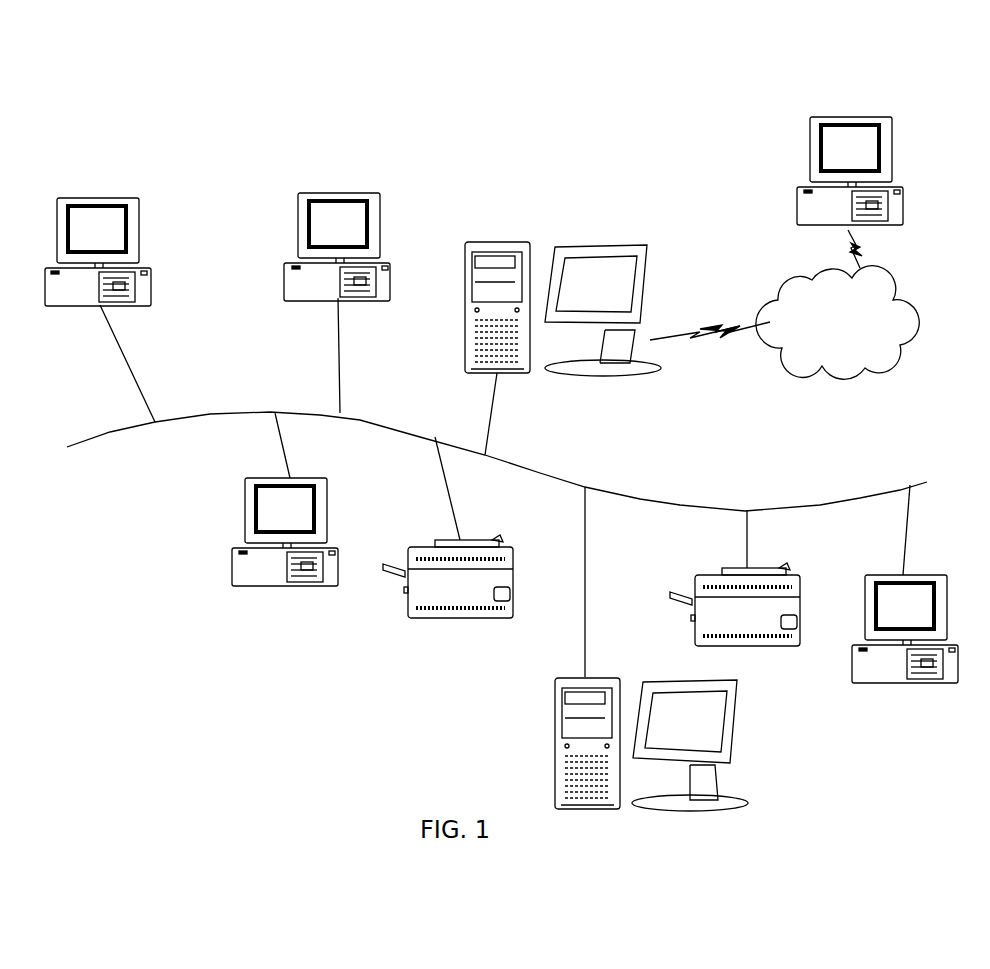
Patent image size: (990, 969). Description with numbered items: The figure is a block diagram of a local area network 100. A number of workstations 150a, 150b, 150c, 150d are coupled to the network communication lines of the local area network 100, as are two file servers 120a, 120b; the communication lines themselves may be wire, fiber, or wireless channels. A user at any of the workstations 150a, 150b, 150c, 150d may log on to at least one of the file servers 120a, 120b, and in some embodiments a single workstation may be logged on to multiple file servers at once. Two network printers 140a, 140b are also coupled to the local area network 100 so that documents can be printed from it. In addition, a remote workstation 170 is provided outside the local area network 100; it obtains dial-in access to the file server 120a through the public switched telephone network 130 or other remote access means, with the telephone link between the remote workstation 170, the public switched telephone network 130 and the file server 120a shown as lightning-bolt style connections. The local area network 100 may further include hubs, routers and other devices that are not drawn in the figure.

The local area network 100 is at (478, 102).
The file server 120a is at (500, 242).
The file server 120b is at (557, 700).
The public switched telephone network 130 is at (822, 373).
The network printer 140a is at (800, 607).
The network printer 140b is at (462, 618).
The workstation 150a is at (97, 198).
The workstation 150b is at (340, 193).
The workstation 150c is at (290, 588).
The workstation 150d is at (903, 682).
The remote workstation 170 is at (848, 117).